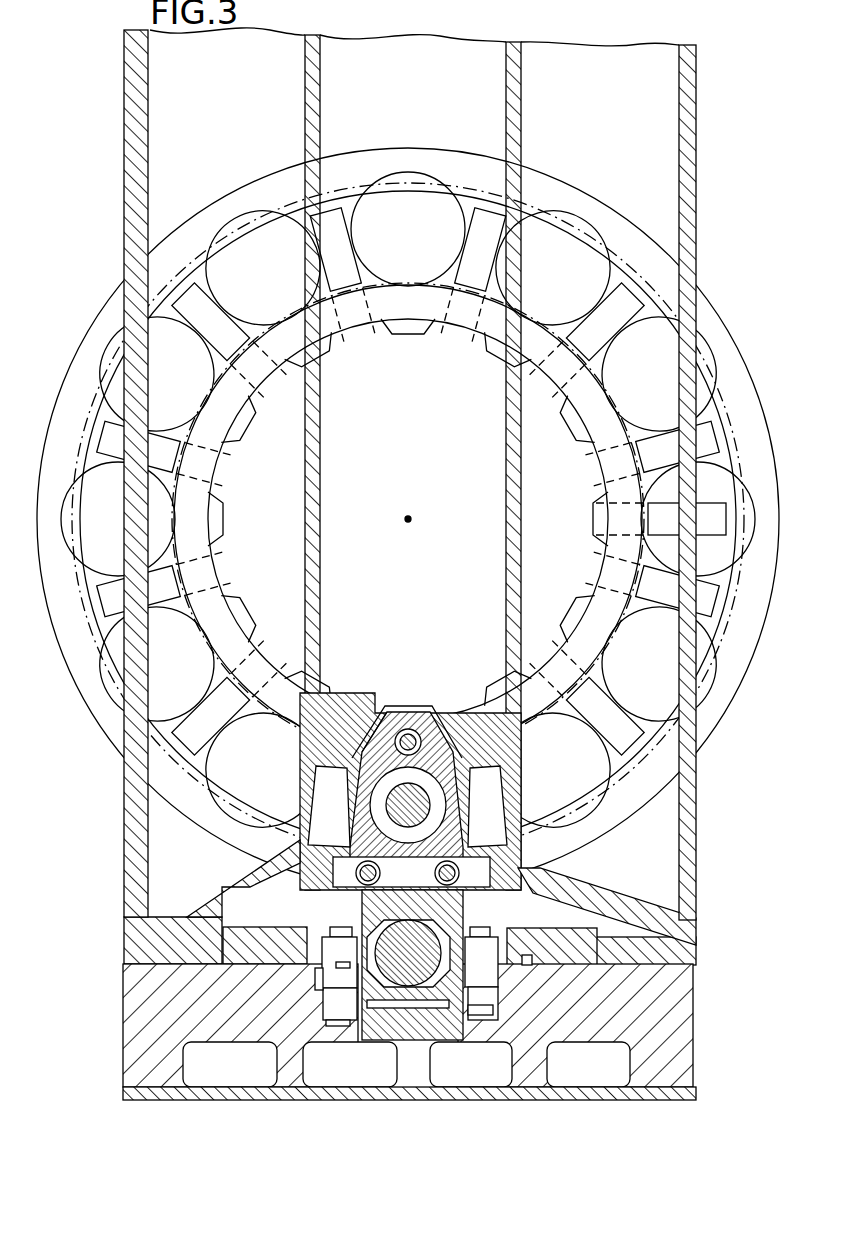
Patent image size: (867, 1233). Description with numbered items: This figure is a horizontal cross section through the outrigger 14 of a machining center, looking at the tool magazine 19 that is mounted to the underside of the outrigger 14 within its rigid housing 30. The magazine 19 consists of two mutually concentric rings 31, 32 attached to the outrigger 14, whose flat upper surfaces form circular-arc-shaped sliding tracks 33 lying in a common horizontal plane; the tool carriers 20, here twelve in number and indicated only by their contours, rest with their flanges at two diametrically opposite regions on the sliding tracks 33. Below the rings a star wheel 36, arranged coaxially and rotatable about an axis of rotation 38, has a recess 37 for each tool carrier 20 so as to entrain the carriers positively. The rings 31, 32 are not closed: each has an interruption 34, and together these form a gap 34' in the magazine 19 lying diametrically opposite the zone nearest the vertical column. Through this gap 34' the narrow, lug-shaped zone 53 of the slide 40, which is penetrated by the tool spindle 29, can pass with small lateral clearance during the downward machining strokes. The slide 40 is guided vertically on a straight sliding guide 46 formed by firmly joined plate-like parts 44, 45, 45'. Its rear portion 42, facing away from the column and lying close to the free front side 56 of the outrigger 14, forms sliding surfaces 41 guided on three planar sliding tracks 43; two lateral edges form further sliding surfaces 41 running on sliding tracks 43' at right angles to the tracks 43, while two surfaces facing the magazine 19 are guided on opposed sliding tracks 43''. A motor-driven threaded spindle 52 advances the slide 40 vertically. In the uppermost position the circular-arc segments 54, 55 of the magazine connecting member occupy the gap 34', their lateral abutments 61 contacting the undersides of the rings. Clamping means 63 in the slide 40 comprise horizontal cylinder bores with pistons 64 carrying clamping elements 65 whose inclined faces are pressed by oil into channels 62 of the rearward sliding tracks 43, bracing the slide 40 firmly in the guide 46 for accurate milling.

The outrigger 14 is at (125, 145).
The tool magazine 19 is at (380, 147).
The tool carrier 20 is at (228, 230).
The tool spindle 29 is at (400, 800).
The rigid housing 30 is at (138, 73).
The ring 31 is at (270, 183).
The ring 32 is at (413, 335).
The sliding tracks 33 is at (433, 155).
The interruption 34 is at (385, 749).
The gap 34' is at (407, 681).
The star wheel 36 is at (487, 230).
The recess 37 is at (208, 238).
The axis of rotation 38 is at (410, 516).
The slide 40 is at (400, 1030).
The sliding surfaces 41 is at (300, 955).
The rear portion 42 is at (380, 1000).
The sliding tracks 43 is at (406, 1095).
The sliding tracks 43' is at (421, 961).
The sliding tracks 43'' is at (232, 910).
The plate-like part 44 is at (140, 1048).
The plate-like part 45 is at (184, 902).
The plate-like part 45' is at (607, 916).
The straight sliding guide 46 is at (690, 1026).
The threaded spindle 52 is at (409, 1012).
The zone 53 is at (383, 690).
The segment 54 is at (490, 903).
The segment 55 is at (378, 745).
The front side 56 is at (650, 1100).
The lateral abutments 61 is at (430, 735).
The channels 62 is at (338, 1025).
The clamping means 63 is at (320, 973).
The pistons 64 is at (340, 968).
The clamping elements 65 is at (485, 1012).